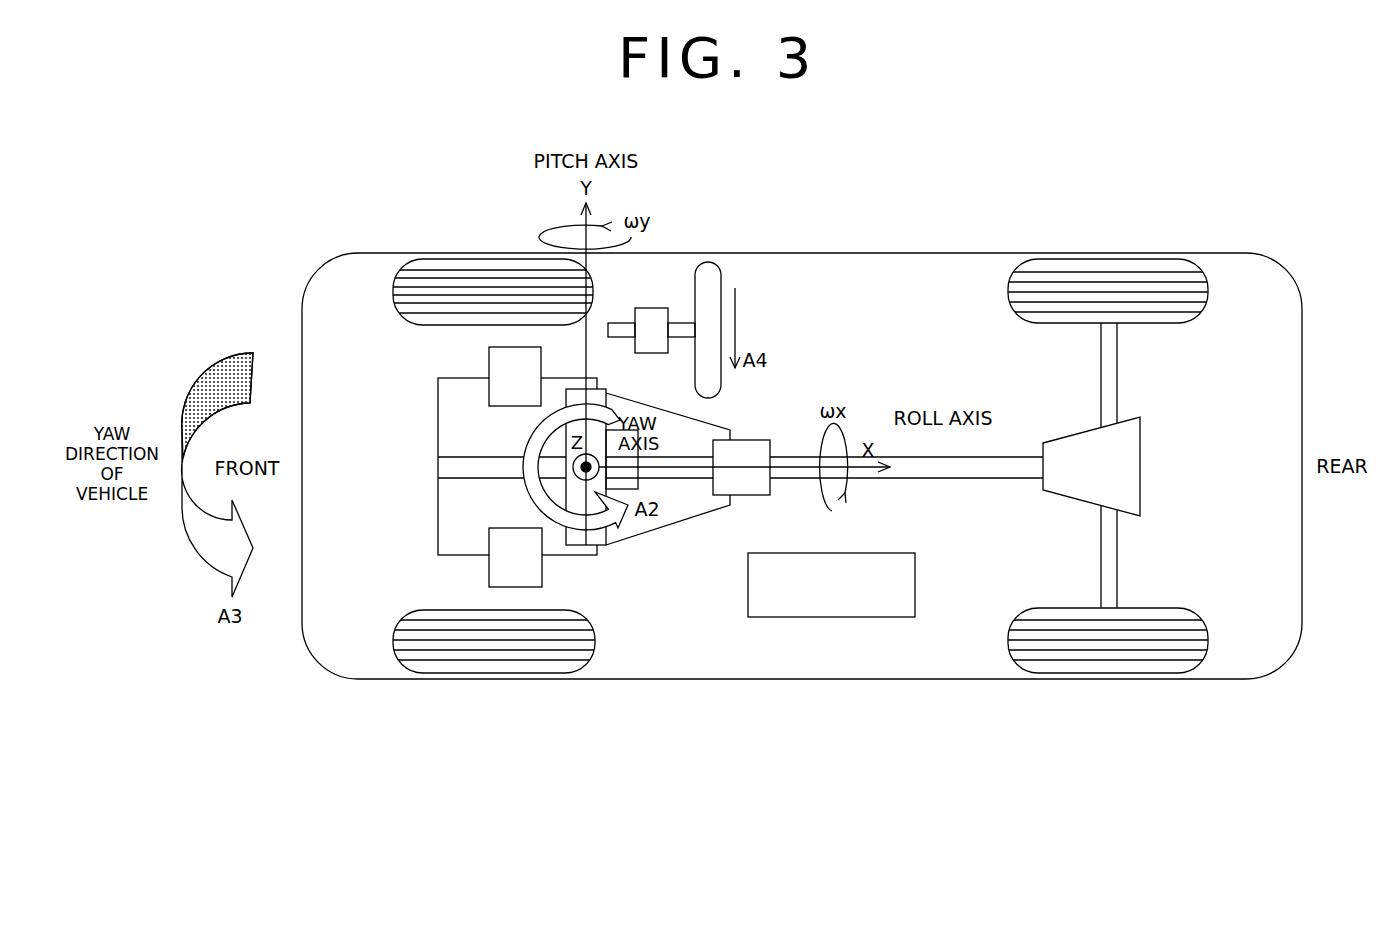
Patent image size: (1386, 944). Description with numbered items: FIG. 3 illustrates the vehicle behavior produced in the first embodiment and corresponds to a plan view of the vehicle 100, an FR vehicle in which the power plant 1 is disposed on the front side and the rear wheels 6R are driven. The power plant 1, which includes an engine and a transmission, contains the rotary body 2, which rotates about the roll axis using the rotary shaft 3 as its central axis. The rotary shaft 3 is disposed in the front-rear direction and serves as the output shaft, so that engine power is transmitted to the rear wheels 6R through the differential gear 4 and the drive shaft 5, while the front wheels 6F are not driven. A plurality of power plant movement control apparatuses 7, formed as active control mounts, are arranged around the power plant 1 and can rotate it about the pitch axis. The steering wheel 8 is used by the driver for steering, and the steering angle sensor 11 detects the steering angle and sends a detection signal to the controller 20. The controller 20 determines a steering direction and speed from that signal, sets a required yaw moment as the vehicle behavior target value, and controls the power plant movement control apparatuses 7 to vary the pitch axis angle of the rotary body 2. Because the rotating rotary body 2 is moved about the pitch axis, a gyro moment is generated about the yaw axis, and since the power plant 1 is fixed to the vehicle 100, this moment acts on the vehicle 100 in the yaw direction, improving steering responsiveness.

The vehicle 100 is at (768, 169).
The power plant 1 is at (447, 435).
The rotary body 2 is at (585, 540).
The rotary shaft 3 is at (495, 475).
The differential gear 4 is at (1063, 445).
The drive shaft 5 is at (1118, 372).
The front wheels 6F is at (490, 258).
The rear wheels 6R is at (1105, 258).
The power plant movement control apparatus 7 is at (489, 361).
The steering wheel 8 is at (713, 262).
The steering angle sensor 11 is at (655, 308).
The controller 20 is at (915, 583).